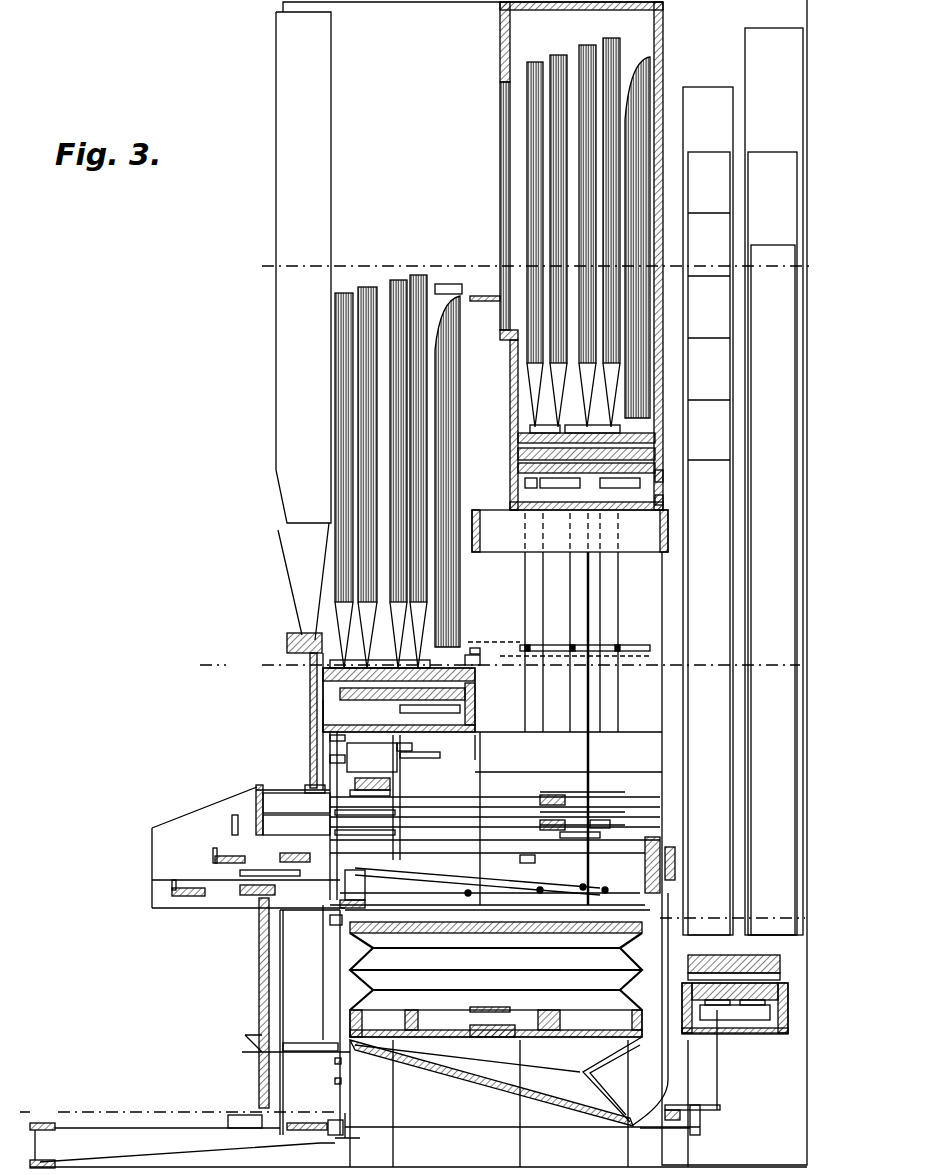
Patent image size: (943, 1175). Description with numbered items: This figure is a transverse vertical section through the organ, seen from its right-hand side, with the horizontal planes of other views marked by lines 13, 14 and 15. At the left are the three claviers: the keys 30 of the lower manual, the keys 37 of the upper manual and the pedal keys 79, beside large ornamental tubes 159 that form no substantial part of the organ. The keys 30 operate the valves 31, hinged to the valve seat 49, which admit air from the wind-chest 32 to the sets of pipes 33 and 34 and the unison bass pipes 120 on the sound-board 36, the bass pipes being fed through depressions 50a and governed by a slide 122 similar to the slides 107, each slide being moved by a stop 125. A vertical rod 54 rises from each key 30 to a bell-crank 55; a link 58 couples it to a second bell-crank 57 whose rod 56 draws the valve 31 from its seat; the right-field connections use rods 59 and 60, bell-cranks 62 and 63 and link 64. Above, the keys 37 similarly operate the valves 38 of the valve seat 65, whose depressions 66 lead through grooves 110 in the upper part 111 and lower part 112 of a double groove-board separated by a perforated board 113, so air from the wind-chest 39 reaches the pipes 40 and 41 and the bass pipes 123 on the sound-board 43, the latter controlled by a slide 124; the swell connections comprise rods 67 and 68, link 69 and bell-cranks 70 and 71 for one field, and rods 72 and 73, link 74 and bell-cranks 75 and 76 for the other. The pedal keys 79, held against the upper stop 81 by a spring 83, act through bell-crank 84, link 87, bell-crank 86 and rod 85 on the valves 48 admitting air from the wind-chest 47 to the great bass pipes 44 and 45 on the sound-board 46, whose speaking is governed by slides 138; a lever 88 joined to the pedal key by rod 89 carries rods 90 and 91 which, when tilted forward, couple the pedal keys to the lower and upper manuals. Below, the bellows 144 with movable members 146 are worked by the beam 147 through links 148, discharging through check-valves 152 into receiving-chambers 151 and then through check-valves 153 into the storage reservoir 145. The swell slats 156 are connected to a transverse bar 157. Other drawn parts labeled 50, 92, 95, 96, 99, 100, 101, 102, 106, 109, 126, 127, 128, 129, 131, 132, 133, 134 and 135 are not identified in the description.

The section line 13 is at (424, 1016).
The section line 14 is at (512, 666).
The section line 15 is at (533, 266).
The keys 30 is at (170, 882).
The valves 31 is at (430, 715).
The wind-chest 32 is at (488, 746).
The set of pipes 33 is at (366, 286).
The set of pipes 34 is at (420, 274).
The sound-board 36 is at (472, 664).
The keys 37 is at (212, 852).
The valves 38 is at (552, 489).
The wind-chest 39 is at (513, 512).
The set of pipes 40 is at (535, 62).
The set of pipes 41 is at (591, 45).
The sound-board 43 is at (583, 432).
The large pipes 44 is at (708, 511).
The large pipes 45 is at (774, 481).
The sound-board 46 is at (778, 956).
The wind-chest 47 is at (765, 1034).
The valves 48 is at (735, 1013).
The valve seat 49 is at (470, 690).
The plate 50 is at (399, 719).
The depressions 50a is at (476, 712).
The vertical rod 54 is at (330, 738).
The bell-crank 55 is at (322, 710).
The vertical rod 56 is at (402, 705).
The bell-crank 57 is at (412, 747).
The link 58 is at (365, 816).
The rod 59 is at (305, 787).
The rod 60 is at (435, 752).
The bell-crank 62 is at (330, 758).
The bell-crank 63 is at (392, 782).
The link 64 is at (392, 793).
The valve seat 65 is at (671, 497).
The depressions 66 is at (620, 489).
The rod 67 is at (293, 810).
The rod 68 is at (590, 703).
The link 69 is at (495, 834).
The bell-crank 70 is at (582, 805).
The bell-crank 71 is at (380, 812).
The rod 72 is at (296, 825).
The rod 73 is at (605, 834).
The link 74 is at (495, 835).
The bell-crank 75 is at (375, 838).
The bell-crank 76 is at (580, 839).
The pedal keys 79 is at (182, 1145).
The upper stop 81 is at (307, 1115).
The spring 83 is at (240, 1128).
The bell-crank 84 is at (341, 1120).
The vertical rod 85 is at (728, 1060).
The bell-crank 86 is at (700, 1125).
The link 87 is at (445, 1128).
The lever 88 is at (284, 1003).
The vertical rod 89 is at (310, 1022).
The rod 90 is at (332, 929).
The rod 91 is at (361, 911).
The bracket 92 is at (356, 885).
The roller 95 is at (536, 891).
The pin 96 is at (515, 862).
The roller 99 is at (590, 883).
The block 100 is at (278, 894).
The bar 101 is at (270, 878).
The block 102 is at (280, 854).
The roller 106 is at (470, 896).
The slides 107 is at (318, 700).
The bar 109 is at (477, 881).
The grooves 110 is at (548, 424).
The upper part of groove-board 111 is at (518, 438).
The lower part of groove-board 112 is at (518, 468).
The perforated board 113 is at (518, 453).
The unison bass pipes 120 is at (446, 465).
The slide 122 is at (462, 678).
The unison bass pipes 123 is at (636, 62).
The slide 124 is at (663, 476).
The stop 125 is at (233, 822).
The lever 126 is at (204, 847).
The rods 127 is at (570, 585).
The wire 128 is at (491, 638).
The bar 129 is at (612, 646).
The block 131 is at (332, 645).
The lever 132 is at (245, 1038).
The pins 133 is at (335, 1062).
The bracket 134 is at (315, 1043).
The rod 135 is at (323, 990).
The slides 138 is at (720, 960).
The bellows 144 is at (605, 1060).
The storage reservoir 145 is at (496, 966).
The movable members 146 is at (455, 1075).
The horizontal beam 147 is at (676, 858).
The links 148 is at (650, 1009).
The receiving-chambers 151 is at (560, 1018).
The check-valve 152 is at (488, 1038).
The check-valve 153 is at (490, 1000).
The hinged slats 156 is at (500, 212).
The transverse bar 157 is at (485, 302).
The large tubes 159 is at (303, 326).